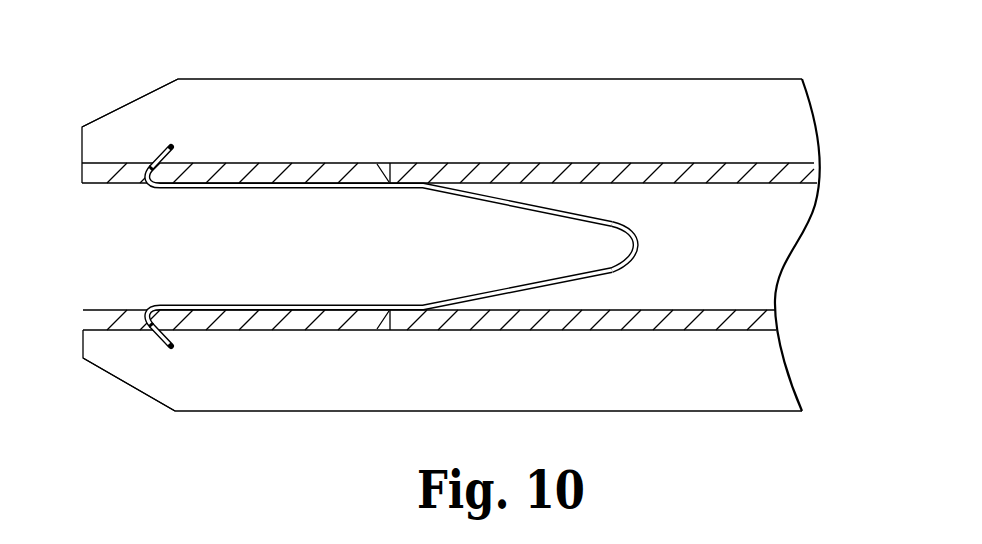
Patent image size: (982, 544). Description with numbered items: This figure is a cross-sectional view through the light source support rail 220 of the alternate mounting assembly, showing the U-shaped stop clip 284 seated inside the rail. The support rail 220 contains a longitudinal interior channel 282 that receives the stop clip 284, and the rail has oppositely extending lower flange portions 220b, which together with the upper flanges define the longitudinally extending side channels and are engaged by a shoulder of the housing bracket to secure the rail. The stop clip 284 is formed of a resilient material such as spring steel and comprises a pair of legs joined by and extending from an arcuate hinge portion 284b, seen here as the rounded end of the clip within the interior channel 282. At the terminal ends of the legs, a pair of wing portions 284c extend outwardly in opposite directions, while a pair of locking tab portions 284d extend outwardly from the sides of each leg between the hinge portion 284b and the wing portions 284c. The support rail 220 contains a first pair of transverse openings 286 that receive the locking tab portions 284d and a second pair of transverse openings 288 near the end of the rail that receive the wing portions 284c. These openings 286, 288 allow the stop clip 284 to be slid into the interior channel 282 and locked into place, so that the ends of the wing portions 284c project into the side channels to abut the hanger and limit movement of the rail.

The light source support rail 220 is at (360, 77).
The lower flange portions 220b is at (259, 96).
The longitudinal interior channel 282 is at (772, 259).
The U-shaped stop clip 284 is at (579, 289).
The arcuate hinge portion 284b is at (637, 237).
The wing portions 284c is at (171, 143).
The locking tab portions 284d is at (388, 162).
The first pair of transverse openings 286 is at (360, 185).
The second pair of transverse openings 288 is at (162, 186).